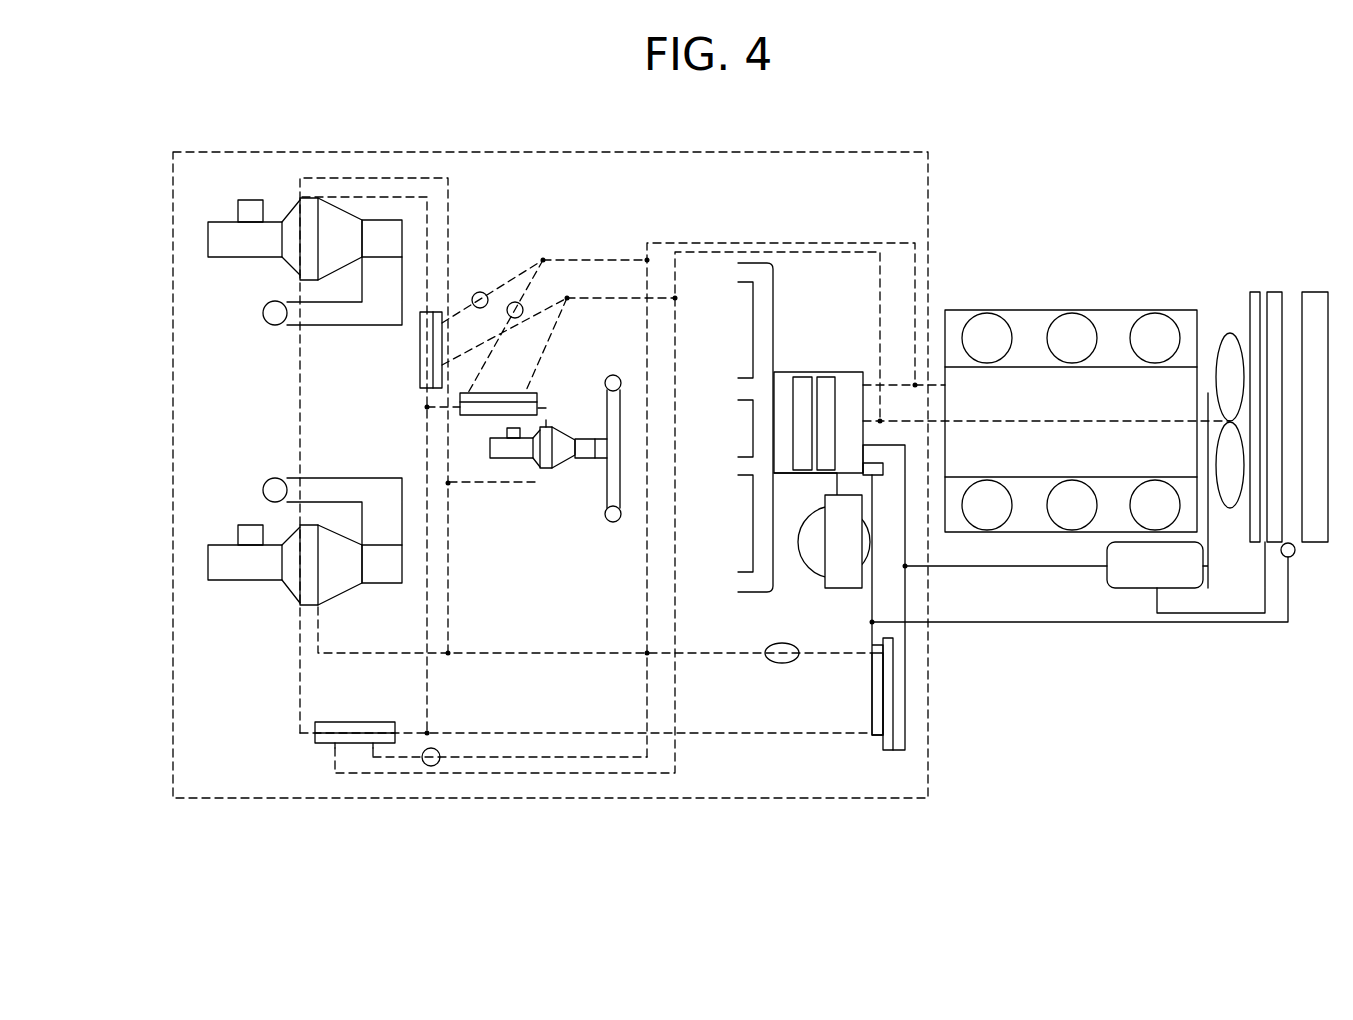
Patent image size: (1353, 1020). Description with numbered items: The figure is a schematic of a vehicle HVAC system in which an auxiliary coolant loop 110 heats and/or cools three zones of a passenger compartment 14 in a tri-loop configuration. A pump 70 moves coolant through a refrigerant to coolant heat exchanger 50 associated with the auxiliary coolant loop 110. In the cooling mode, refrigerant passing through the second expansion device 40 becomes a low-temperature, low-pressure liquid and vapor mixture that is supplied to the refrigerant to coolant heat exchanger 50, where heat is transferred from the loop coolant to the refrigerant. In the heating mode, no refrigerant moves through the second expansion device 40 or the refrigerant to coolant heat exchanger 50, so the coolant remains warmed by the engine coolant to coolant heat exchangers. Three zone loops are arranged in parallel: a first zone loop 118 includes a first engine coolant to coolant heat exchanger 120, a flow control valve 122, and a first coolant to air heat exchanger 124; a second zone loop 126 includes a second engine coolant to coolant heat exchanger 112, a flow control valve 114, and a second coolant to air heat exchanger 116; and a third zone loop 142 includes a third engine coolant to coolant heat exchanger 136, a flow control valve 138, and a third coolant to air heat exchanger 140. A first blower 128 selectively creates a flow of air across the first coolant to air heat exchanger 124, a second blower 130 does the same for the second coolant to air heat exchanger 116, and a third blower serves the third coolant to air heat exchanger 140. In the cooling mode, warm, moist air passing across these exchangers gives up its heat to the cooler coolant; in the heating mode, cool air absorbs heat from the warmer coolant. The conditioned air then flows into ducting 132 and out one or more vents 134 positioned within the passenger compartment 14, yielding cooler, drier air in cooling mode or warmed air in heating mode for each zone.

The passenger compartment 14 is at (173, 355).
The second expansion device 40 is at (895, 645).
The refrigerant to coolant heat exchanger 50 is at (871, 740).
The pump 70 is at (770, 645).
The auxiliary coolant loop 110 is at (788, 735).
The second engine coolant to coolant heat exchanger 112 is at (425, 392).
The flow control valve 114 is at (481, 291).
The second coolant to air heat exchanger 116 is at (292, 268).
The first zone loop 118 is at (525, 652).
The first engine coolant to coolant heat exchanger 120 is at (338, 720).
The flow control valve 122 is at (437, 748).
The first coolant to air heat exchanger 124 is at (298, 590).
The second zone loop 126 is at (380, 177).
The first blower 128 is at (243, 523).
The second blower 130 is at (240, 198).
The ducting 132 is at (305, 327).
The vents 134 is at (272, 327).
The third engine coolant to coolant heat exchanger 136 is at (540, 393).
The flow control valve 138 is at (520, 304).
The third coolant to air heat exchanger 140 is at (517, 462).
The third zone loop 142 is at (545, 483).